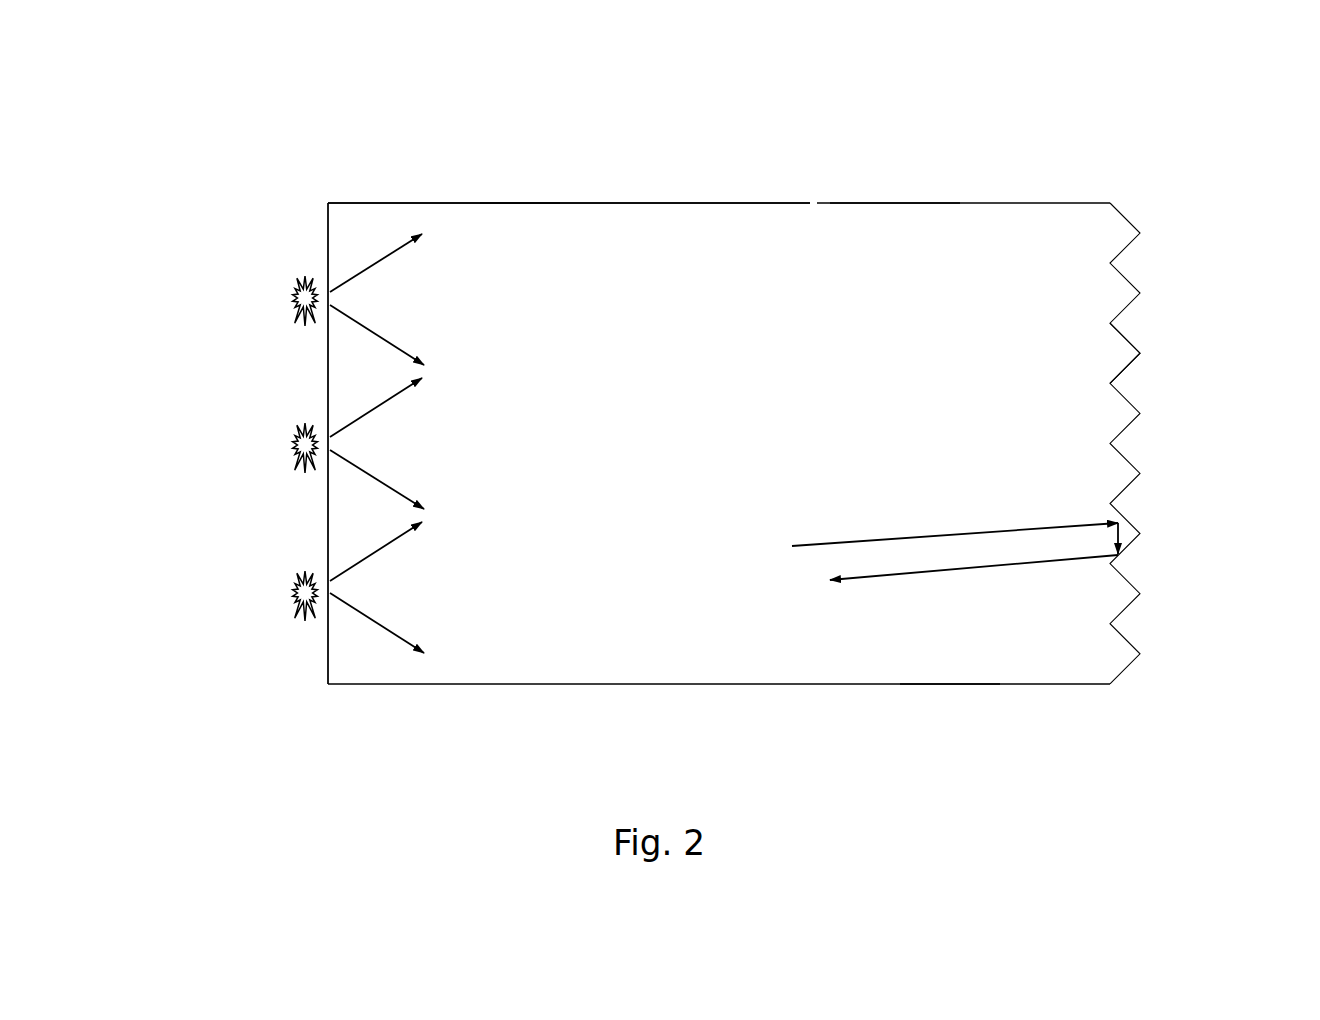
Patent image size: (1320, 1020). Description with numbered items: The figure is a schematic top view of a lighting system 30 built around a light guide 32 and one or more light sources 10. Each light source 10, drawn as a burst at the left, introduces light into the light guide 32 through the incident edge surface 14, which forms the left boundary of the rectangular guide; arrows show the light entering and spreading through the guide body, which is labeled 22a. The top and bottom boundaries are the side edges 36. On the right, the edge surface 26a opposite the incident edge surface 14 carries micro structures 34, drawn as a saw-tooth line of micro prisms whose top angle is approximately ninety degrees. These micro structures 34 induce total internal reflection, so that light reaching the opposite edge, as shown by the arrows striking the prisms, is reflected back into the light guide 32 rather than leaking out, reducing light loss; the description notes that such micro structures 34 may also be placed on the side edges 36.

The light source 10 is at (292, 293).
The incident edge surface 14 is at (325, 653).
The light guide body 22a is at (719, 443).
The serrated rear surface 26a is at (1147, 615).
The lighting system 30 is at (710, 158).
The light guide 32 is at (880, 258).
The micro structures 34 is at (1127, 338).
The side edges 36 is at (518, 203).